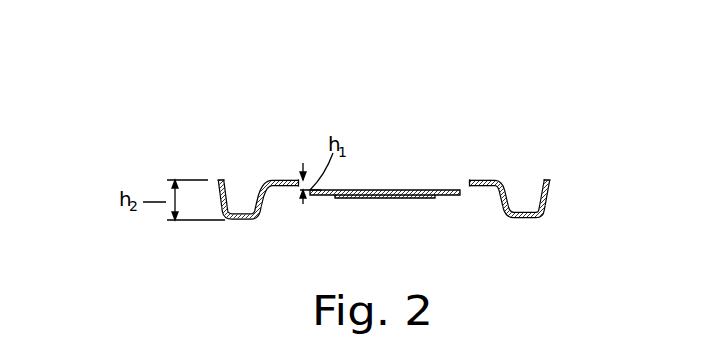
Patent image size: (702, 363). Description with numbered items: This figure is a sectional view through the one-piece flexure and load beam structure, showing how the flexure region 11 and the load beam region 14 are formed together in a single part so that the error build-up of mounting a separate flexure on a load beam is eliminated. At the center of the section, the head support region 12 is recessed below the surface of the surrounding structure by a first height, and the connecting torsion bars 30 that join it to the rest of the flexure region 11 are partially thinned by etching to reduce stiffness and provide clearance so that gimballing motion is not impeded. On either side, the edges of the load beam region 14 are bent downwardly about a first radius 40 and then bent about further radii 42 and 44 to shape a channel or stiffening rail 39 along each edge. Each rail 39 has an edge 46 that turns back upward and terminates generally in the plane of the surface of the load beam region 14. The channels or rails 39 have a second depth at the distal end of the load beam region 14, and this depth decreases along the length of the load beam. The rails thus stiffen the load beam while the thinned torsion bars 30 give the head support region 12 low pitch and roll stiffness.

The flexure region 11 is at (394, 181).
The head support region 12 is at (378, 190).
The load beam region 14 is at (285, 179).
The connecting torsion bars 30 is at (325, 190).
The stiffening rail 39 is at (245, 224).
The first radius 40 is at (269, 191).
The radius 42 is at (260, 219).
The radius 44 is at (225, 219).
The edge 46 is at (218, 178).